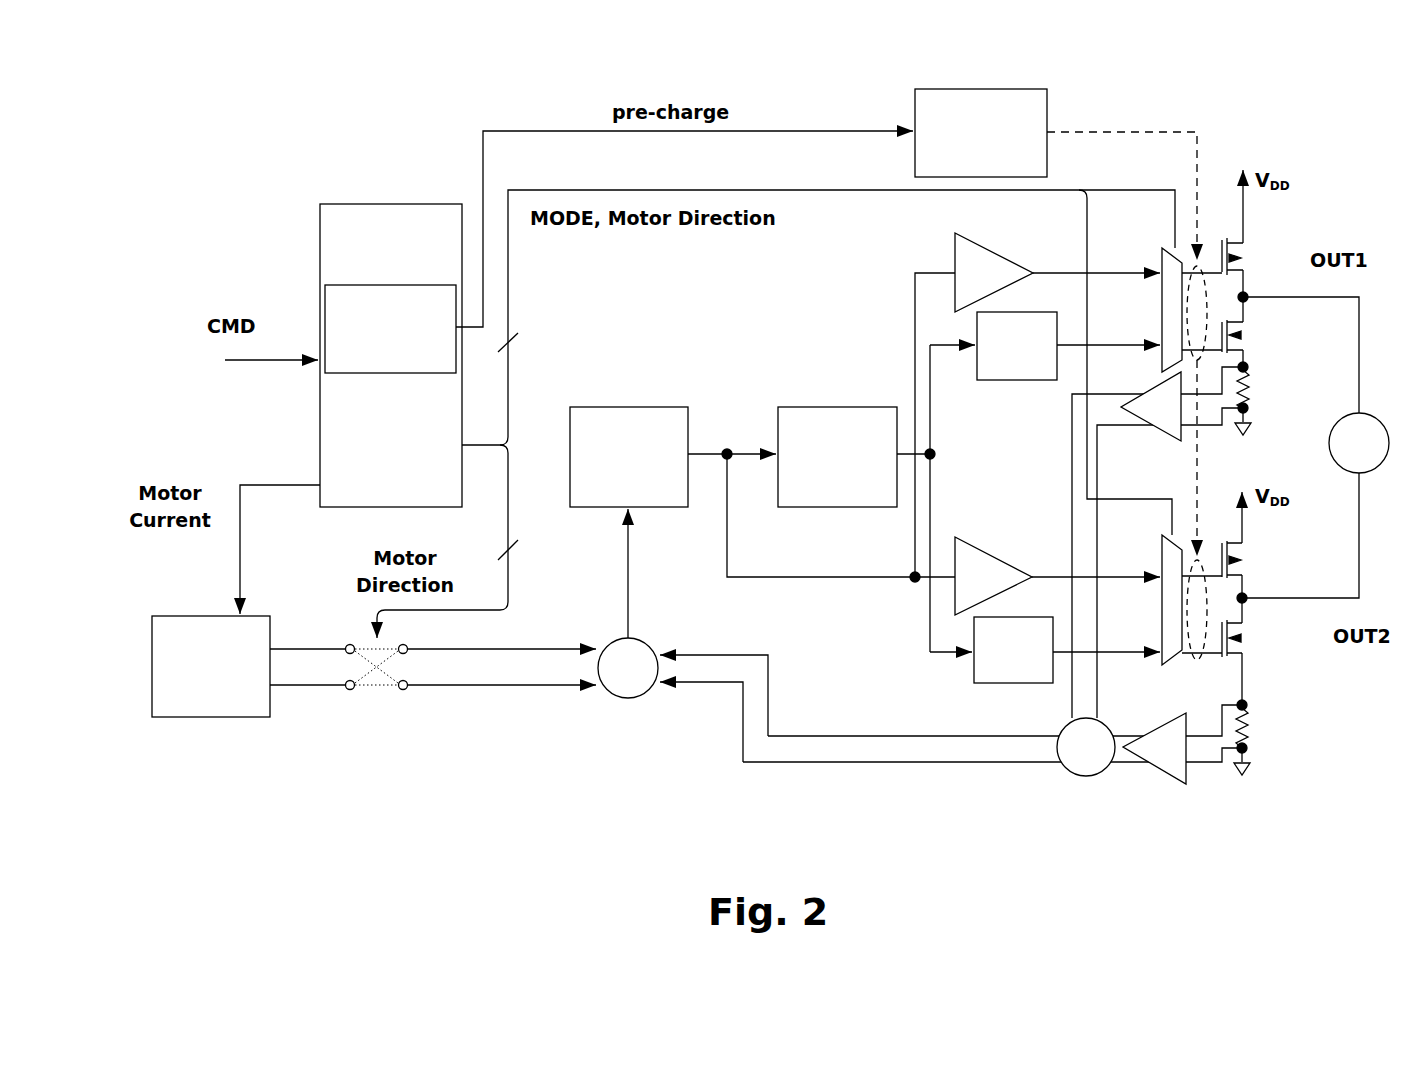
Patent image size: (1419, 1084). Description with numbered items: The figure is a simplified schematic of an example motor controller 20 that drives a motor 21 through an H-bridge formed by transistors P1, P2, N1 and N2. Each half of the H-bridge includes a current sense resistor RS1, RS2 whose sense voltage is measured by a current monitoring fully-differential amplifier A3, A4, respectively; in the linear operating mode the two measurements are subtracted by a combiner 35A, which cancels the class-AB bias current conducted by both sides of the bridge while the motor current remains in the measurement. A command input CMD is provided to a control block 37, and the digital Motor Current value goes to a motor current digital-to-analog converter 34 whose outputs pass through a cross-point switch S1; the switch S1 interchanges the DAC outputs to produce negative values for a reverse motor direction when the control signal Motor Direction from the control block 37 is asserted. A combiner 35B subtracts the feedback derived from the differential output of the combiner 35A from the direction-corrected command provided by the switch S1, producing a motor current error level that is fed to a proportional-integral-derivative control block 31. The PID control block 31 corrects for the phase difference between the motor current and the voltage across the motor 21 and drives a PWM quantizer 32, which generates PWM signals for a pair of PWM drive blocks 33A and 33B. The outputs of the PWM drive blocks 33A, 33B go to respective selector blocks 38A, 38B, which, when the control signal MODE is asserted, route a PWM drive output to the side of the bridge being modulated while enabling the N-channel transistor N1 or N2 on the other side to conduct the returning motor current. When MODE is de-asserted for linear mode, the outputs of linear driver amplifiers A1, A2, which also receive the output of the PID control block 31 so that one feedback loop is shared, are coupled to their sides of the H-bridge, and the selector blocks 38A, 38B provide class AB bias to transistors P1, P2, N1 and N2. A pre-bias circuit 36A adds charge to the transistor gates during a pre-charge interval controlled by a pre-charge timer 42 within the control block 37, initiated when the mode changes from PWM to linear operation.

The motor controller 20 is at (1132, 130).
The motor 21 is at (1368, 420).
The PID control block 31 is at (634, 407).
The PWM quantizer 32 is at (816, 407).
The PWM drive block 33A is at (1008, 382).
The PWM drive block 33B is at (996, 685).
The motor current digital-to-analog converter 34 is at (195, 616).
The combiner 35A is at (1092, 776).
The combiner 35B is at (636, 698).
The pre-bias circuit 36A is at (981, 133).
The control block 37 is at (391, 355).
The selector block 38A is at (1168, 256).
The selector block 38B is at (1162, 548).
The pre-charge timer 42 is at (400, 285).
The linear driver amplifier A1 is at (994, 272).
The linear driver amplifier A2 is at (993, 576).
The fully-differential amplifier A3 is at (1149, 440).
The fully-differential amplifier A4 is at (1162, 786).
The P-channel transistor P1 is at (1253, 256).
The N-channel transistor N1 is at (1254, 336).
The P-channel transistor P2 is at (1253, 559).
The N-channel transistor N2 is at (1254, 638).
The current sense resistor RS1 is at (1268, 389).
The current sense resistor RS2 is at (1267, 728).
The cross-point switch S1 is at (377, 693).